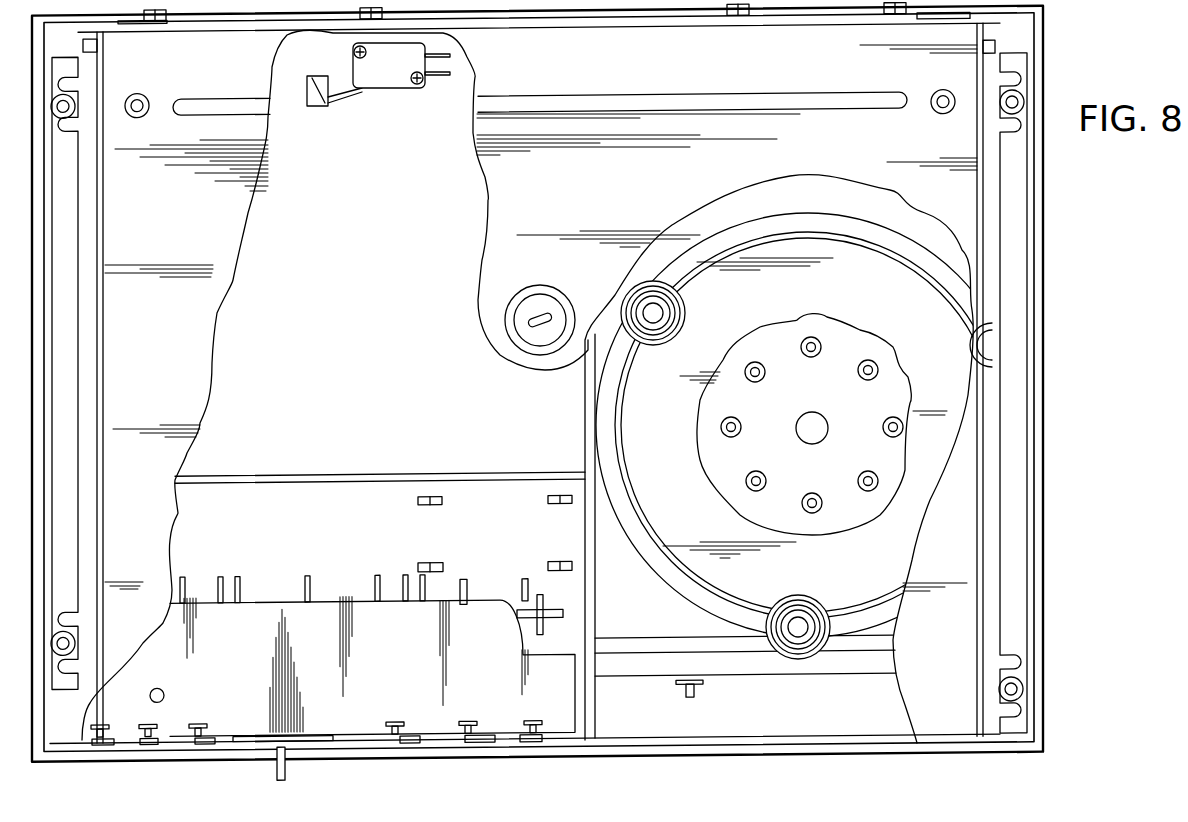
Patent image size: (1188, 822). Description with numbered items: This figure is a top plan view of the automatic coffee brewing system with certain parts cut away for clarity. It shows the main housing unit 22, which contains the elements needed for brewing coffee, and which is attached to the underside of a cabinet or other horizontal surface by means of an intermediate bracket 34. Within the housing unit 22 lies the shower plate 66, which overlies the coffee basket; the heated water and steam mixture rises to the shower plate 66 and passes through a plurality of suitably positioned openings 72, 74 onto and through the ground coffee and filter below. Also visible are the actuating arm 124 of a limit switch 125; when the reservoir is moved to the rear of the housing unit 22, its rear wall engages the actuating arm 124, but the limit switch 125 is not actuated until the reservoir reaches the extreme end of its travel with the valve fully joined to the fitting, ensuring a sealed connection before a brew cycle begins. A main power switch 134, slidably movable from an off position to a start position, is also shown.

The main housing unit 22 is at (1064, 474).
The intermediate bracket 34 is at (207, 73).
The shower plate 66 is at (849, 352).
The openings 72 is at (809, 353).
The openings 74 is at (818, 441).
The actuating arm 124 is at (348, 98).
The limit switch 125 is at (403, 75).
The main power switch 134 is at (290, 769).